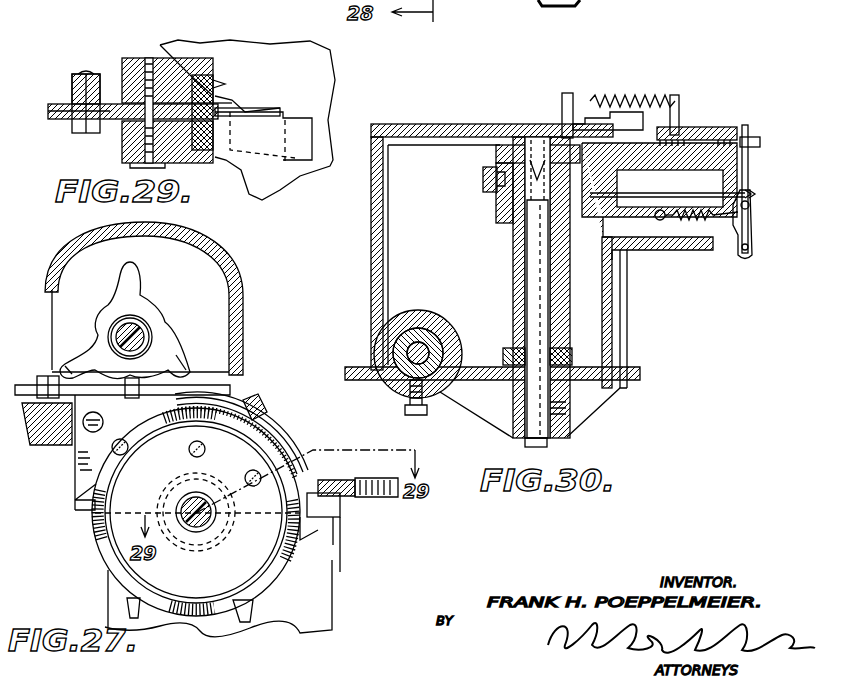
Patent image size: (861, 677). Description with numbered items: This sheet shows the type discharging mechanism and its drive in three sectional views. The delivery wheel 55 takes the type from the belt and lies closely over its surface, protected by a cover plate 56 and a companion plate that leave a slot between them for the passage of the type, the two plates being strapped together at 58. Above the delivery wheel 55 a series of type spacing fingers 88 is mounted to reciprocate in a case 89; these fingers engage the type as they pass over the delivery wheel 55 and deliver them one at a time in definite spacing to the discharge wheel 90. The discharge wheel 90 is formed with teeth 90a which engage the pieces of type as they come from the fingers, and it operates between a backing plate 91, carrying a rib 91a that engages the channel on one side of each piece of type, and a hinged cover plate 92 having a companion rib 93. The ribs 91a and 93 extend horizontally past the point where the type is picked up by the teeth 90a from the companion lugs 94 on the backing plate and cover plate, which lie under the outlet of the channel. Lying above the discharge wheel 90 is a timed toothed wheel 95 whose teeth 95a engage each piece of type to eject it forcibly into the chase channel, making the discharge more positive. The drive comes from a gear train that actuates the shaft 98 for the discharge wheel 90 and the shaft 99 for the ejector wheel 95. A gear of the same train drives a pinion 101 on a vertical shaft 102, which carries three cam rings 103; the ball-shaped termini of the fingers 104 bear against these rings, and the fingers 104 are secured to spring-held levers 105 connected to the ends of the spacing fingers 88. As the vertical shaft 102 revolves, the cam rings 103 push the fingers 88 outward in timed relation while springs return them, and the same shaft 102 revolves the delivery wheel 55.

In FIG. 29, the delivery wheel 55 is at (200, 48).
In FIG. 30, the delivery wheel 55 is at (435, 142).
In FIG. 27, the cover plate 56 is at (353, 478).
In FIG. 30, the cover plate 56 is at (497, 124).
In FIG. 30, the strap 58 is at (608, 112).
In FIG. 30, the type spacing fingers 88 is at (695, 125).
In FIG. 30, the case 89 is at (720, 128).
In FIG. 29, the discharge wheel 90 is at (58, 108).
In FIG. 27, the discharge wheel 90 is at (283, 583).
In FIG. 27, the teeth 90a is at (265, 410).
In FIG. 29, the backing plate 91 is at (204, 86).
In FIG. 27, the backing plate 91 is at (285, 427).
In FIG. 29, the rib 91a is at (222, 96).
In FIG. 27, the rib 91a is at (302, 445).
In FIG. 29, the hinged cover plate 92 is at (112, 138).
In FIG. 29, the companion rib 93 is at (197, 150).
In FIG. 29, the companion lugs 94 is at (228, 110).
In FIG. 27, the companion lugs 94 is at (343, 508).
In FIG. 27, the timed toothed wheel 95 is at (136, 296).
In FIG. 27, the teeth 95a is at (72, 356).
In FIG. 27, the shaft 98 is at (206, 528).
In FIG. 27, the shaft 99 is at (148, 330).
In FIG. 30, the pinion 101 is at (500, 352).
In FIG. 30, the vertical shaft 102 is at (530, 270).
In FIG. 30, the cam rings 103 is at (500, 208).
In FIG. 30, the fingers 104 is at (636, 188).
In FIG. 30, the levers 105 is at (746, 172).